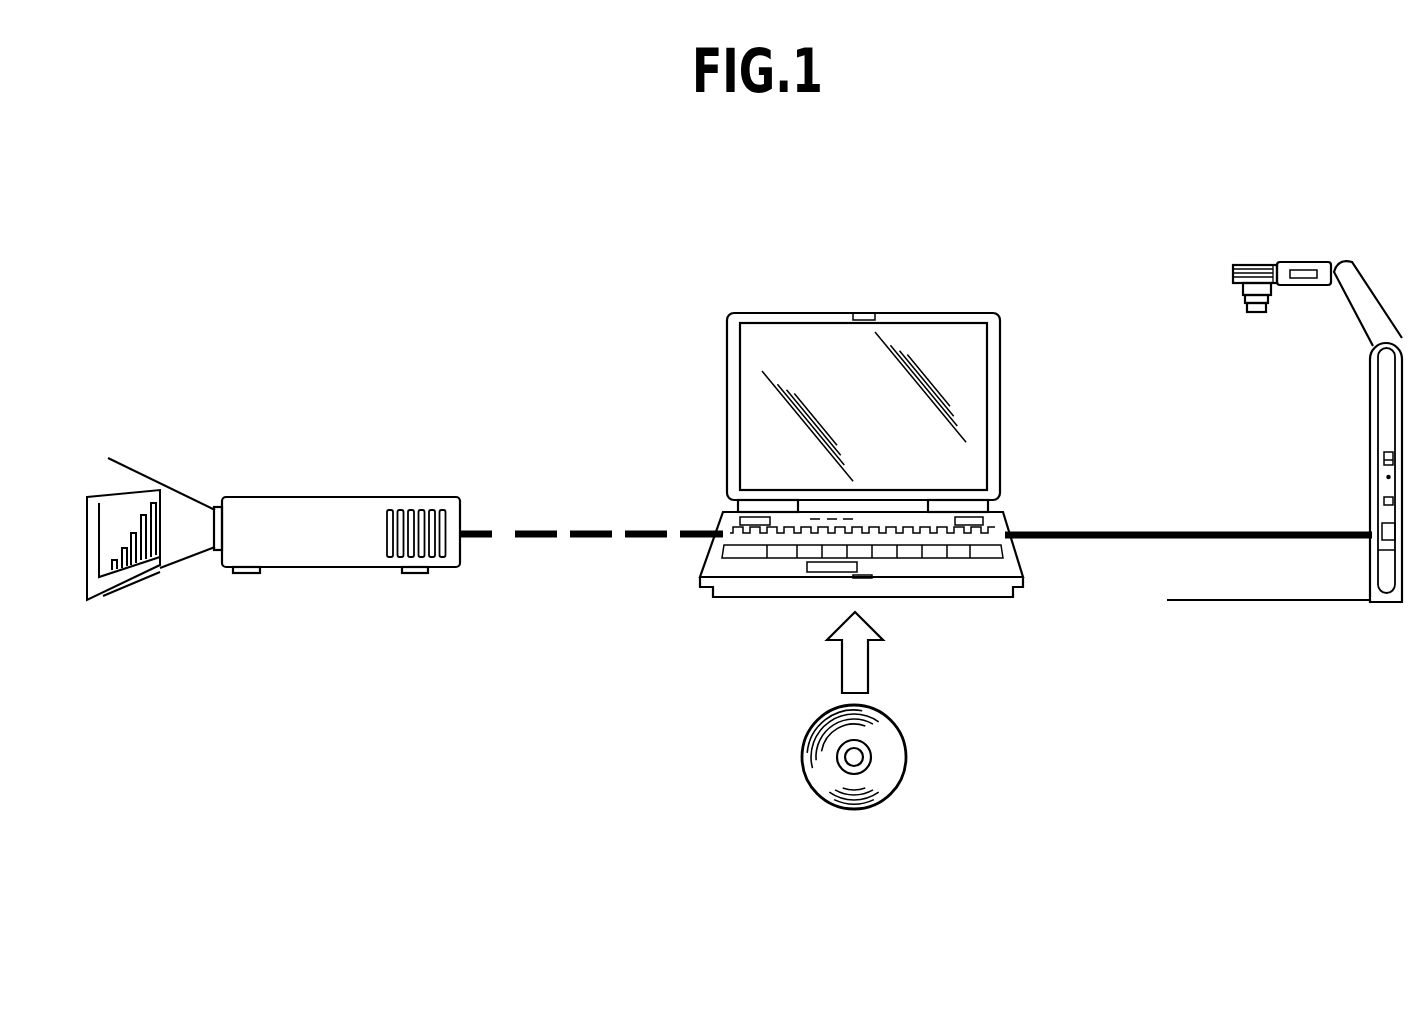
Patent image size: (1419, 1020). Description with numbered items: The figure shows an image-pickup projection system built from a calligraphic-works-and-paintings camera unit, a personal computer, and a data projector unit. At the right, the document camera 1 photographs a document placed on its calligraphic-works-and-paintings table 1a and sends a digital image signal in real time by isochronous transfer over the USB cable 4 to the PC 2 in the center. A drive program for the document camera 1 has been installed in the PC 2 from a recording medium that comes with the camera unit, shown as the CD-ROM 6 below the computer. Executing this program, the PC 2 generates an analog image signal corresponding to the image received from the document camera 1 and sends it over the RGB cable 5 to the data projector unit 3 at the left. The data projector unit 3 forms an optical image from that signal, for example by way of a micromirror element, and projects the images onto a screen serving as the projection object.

The document camera 1 is at (1373, 293).
The calligraphic-works-and-paintings table 1a is at (1253, 601).
The personal computer 2 is at (950, 322).
The data projector unit 3 is at (350, 508).
The USB cable 4 is at (1117, 541).
The RGB cable 5 is at (587, 538).
The CD-ROM 6 is at (897, 727).